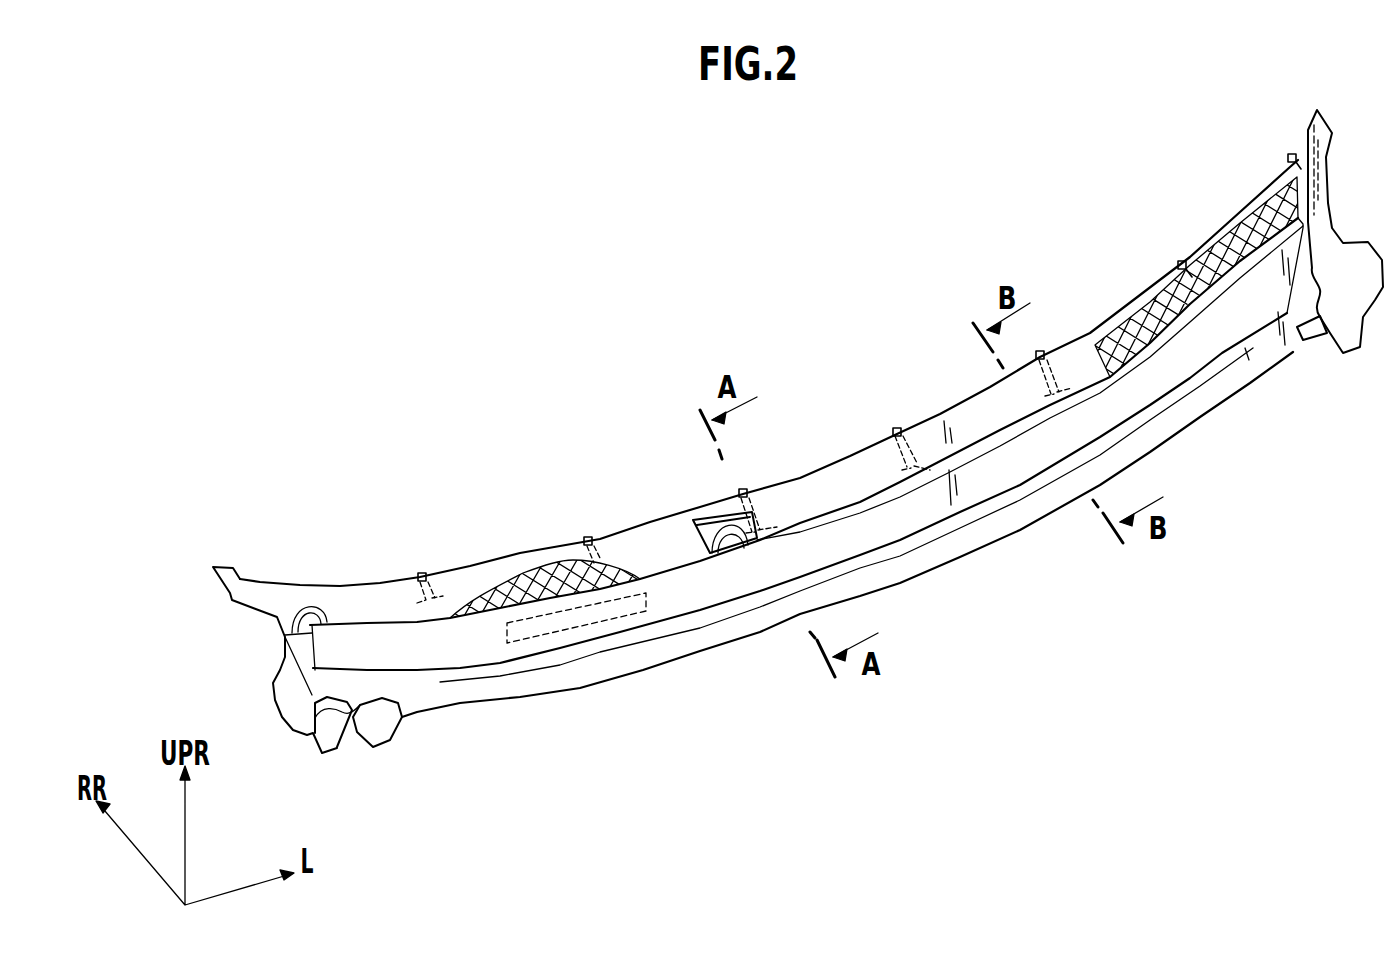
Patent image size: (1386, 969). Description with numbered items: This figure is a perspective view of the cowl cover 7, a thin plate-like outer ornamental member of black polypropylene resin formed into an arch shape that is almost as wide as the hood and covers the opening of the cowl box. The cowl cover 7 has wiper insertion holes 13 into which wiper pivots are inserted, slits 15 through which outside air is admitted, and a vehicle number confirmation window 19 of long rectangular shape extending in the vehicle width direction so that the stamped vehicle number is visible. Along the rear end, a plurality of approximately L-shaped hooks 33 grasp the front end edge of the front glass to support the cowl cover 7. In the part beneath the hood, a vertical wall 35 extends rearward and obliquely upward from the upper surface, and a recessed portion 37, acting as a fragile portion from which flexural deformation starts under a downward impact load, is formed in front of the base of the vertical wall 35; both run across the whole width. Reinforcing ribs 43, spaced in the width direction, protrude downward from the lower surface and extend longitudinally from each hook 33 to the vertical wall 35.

The cowl cover 7 is at (793, 266).
The wiper insertion hole 13 is at (307, 618).
The slit 15 is at (605, 575).
The vehicle number confirmation window 19 is at (597, 628).
The hook 33 is at (422, 572).
The vertical wall 35 is at (983, 478).
The recessed portion 37 is at (958, 527).
The reinforcing rib 43 is at (434, 594).